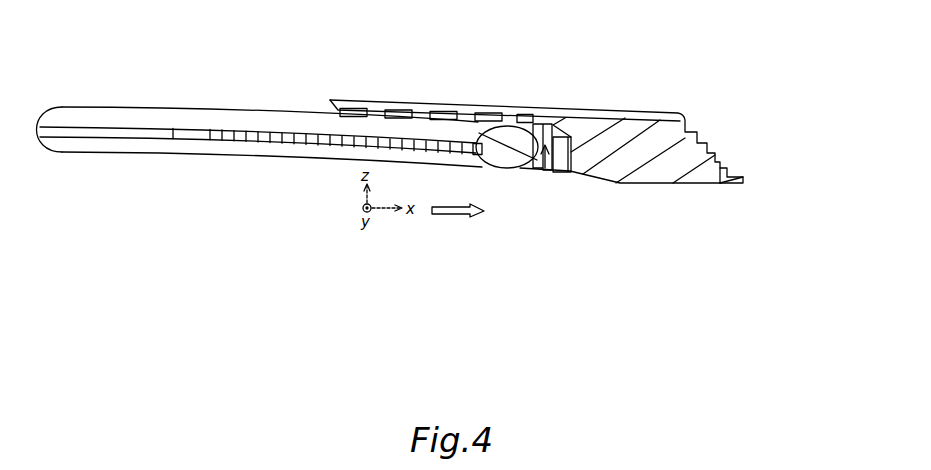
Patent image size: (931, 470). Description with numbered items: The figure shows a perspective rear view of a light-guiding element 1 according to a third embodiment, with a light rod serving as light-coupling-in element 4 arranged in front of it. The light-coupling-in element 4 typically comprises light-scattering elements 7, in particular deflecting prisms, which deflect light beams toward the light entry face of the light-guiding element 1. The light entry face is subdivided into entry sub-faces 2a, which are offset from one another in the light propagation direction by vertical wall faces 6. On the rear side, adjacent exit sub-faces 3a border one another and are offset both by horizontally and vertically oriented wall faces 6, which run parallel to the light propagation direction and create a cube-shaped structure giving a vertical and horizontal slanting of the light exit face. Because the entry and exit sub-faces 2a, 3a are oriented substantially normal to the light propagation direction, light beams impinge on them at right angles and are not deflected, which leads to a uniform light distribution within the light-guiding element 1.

The light-guiding element 1 is at (553, 84).
The entry sub-faces 2a is at (565, 162).
The exit sub-faces 3a is at (737, 162).
The light-coupling-in element 4 is at (160, 145).
The wall faces 6 is at (546, 170).
The light-scattering elements 7 is at (253, 137).